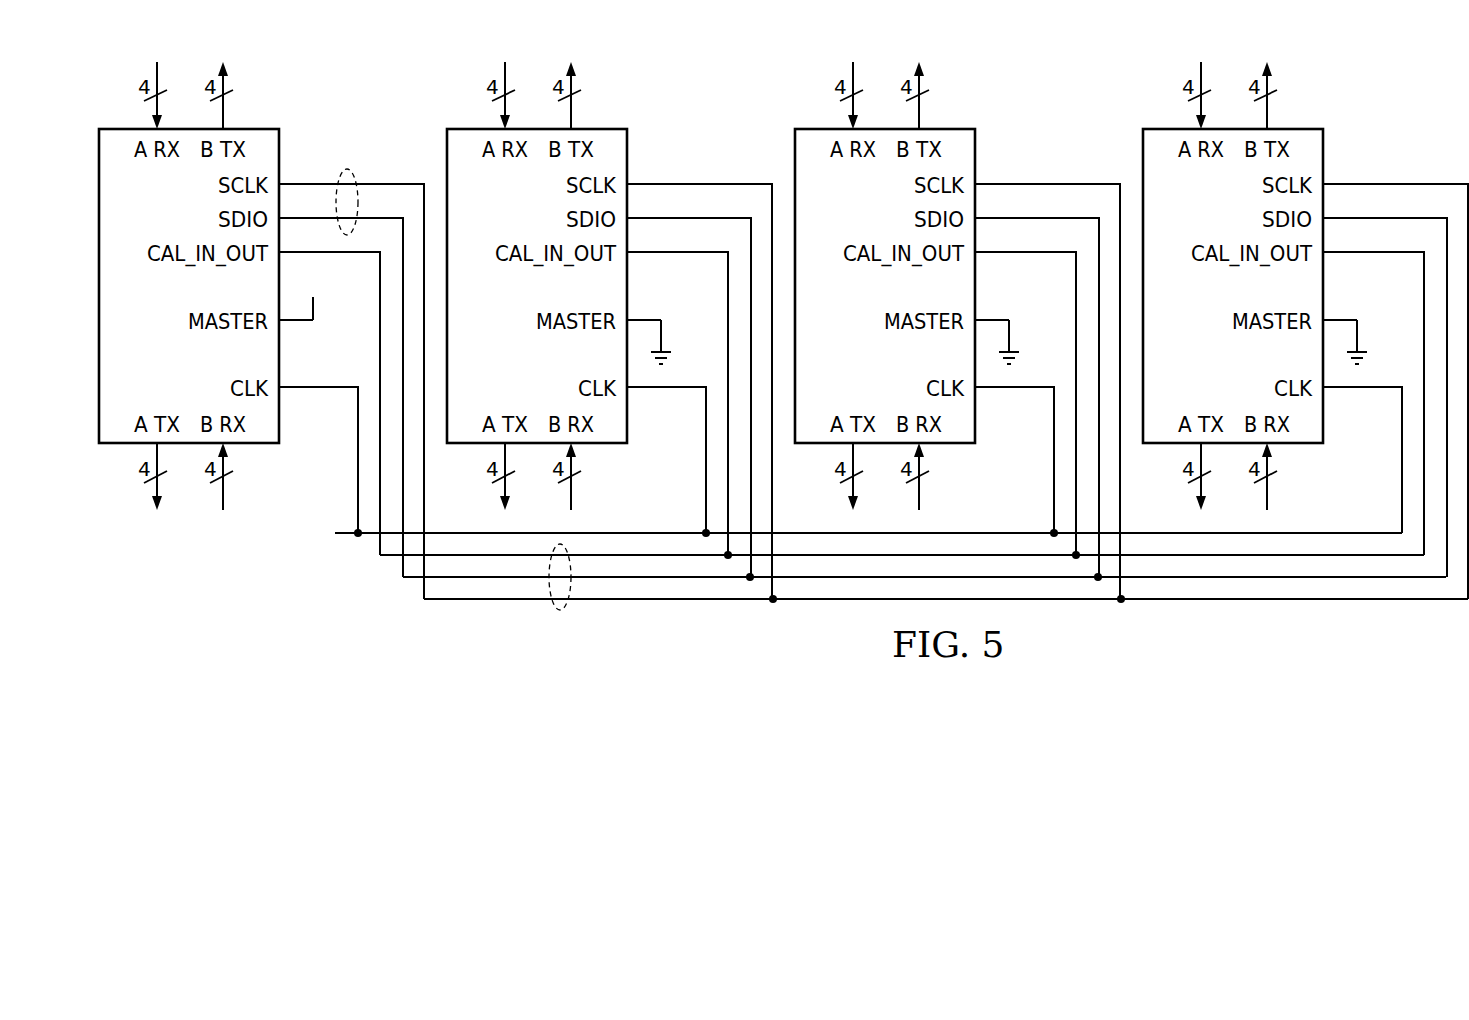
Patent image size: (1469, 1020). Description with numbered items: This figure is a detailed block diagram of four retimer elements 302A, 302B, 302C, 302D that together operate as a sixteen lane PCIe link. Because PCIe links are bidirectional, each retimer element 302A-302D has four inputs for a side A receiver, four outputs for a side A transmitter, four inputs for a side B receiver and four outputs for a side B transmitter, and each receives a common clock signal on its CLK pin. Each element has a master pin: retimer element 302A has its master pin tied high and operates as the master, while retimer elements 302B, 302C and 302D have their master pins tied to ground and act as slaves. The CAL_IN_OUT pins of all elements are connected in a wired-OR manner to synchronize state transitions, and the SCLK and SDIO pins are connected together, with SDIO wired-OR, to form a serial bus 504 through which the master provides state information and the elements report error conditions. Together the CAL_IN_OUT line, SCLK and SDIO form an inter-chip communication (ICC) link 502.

The retimer element 302A is at (280, 343).
The retimer element 302B is at (628, 284).
The retimer element 302C is at (976, 284).
The retimer element 302D is at (1324, 284).
The serial bus 504 is at (346, 170).
The inter-chip communication (ICC) link 502 is at (558, 610).